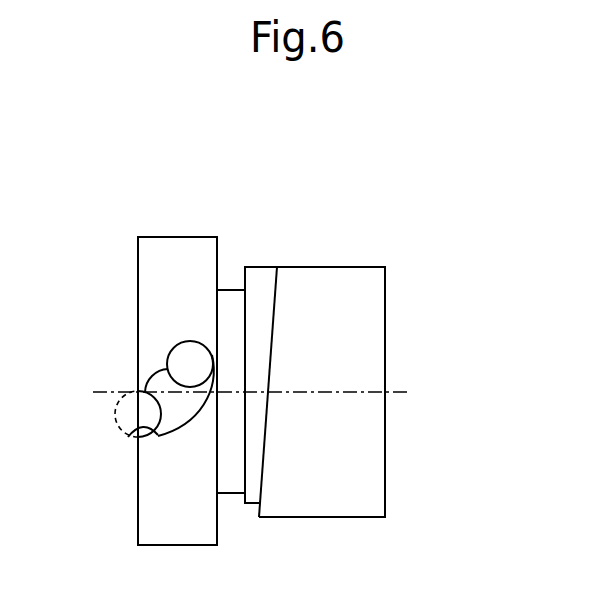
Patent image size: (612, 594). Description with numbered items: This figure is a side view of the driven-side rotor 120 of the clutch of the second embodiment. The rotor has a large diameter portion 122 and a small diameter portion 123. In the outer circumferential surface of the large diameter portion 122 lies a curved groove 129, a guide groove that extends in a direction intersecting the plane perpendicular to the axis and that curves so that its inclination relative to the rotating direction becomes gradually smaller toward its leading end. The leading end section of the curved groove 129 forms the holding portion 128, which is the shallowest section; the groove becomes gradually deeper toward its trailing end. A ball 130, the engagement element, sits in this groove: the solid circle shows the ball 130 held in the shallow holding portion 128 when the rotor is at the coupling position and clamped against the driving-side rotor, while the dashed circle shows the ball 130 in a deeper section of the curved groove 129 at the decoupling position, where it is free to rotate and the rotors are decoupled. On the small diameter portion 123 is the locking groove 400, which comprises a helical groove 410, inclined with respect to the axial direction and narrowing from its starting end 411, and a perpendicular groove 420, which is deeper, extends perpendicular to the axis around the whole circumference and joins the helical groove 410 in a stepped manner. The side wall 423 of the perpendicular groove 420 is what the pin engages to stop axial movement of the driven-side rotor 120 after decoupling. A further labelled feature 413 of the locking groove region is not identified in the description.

The driven-side rotor 120 is at (331, 352).
The large diameter portion 122 is at (138, 500).
The small diameter portion 123 is at (322, 267).
The holding portion 128 is at (197, 350).
The curved groove 129 is at (133, 430).
The ball 130 is at (178, 352).
The locking groove 400 is at (270, 316).
The helical groove 410 is at (282, 334).
The starting end 411 is at (255, 267).
The inclined surface 413 is at (277, 267).
The perpendicular groove 420 is at (237, 290).
The side wall 423 is at (236, 410).